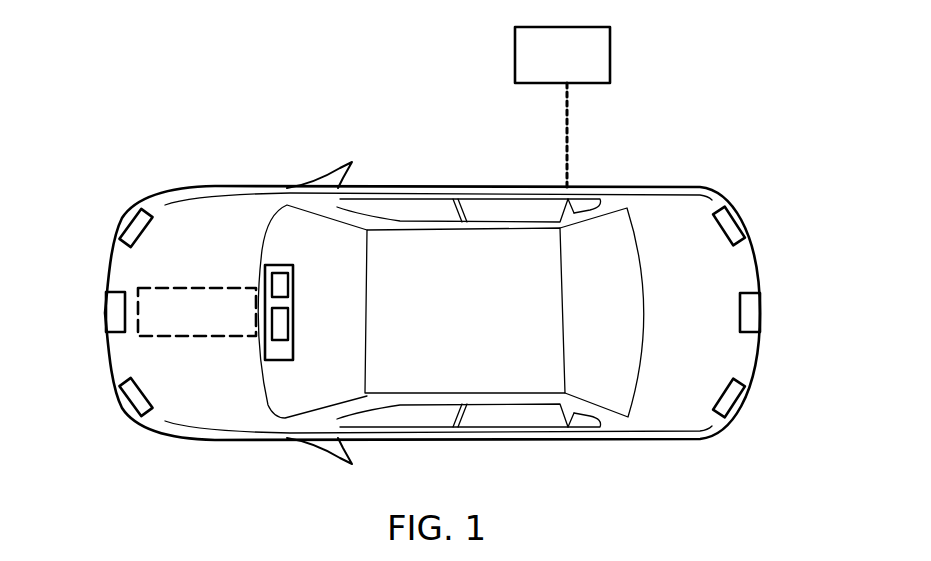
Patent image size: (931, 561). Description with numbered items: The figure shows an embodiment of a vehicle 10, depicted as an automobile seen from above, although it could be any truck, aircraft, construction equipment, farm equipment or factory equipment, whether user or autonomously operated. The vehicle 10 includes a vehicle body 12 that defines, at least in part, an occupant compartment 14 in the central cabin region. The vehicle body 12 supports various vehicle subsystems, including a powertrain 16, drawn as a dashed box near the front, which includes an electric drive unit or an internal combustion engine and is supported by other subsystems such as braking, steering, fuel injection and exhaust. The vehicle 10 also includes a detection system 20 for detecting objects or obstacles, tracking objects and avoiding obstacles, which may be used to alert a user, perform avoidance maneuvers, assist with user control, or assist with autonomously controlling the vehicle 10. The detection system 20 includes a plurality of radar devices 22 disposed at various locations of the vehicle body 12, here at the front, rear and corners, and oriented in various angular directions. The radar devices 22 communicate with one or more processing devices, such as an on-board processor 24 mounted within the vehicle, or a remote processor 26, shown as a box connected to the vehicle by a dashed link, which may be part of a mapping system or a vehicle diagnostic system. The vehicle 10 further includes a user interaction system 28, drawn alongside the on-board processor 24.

The vehicle 10 is at (285, 188).
The vehicle body 12 is at (628, 417).
The occupant compartment 14 is at (491, 378).
The powertrain 16 is at (173, 287).
The detection system 20 is at (414, 153).
The radar devices 22 is at (128, 226).
The on-board processor 24 is at (286, 284).
The remote processor 26 is at (603, 52).
The user interaction system 28 is at (286, 322).